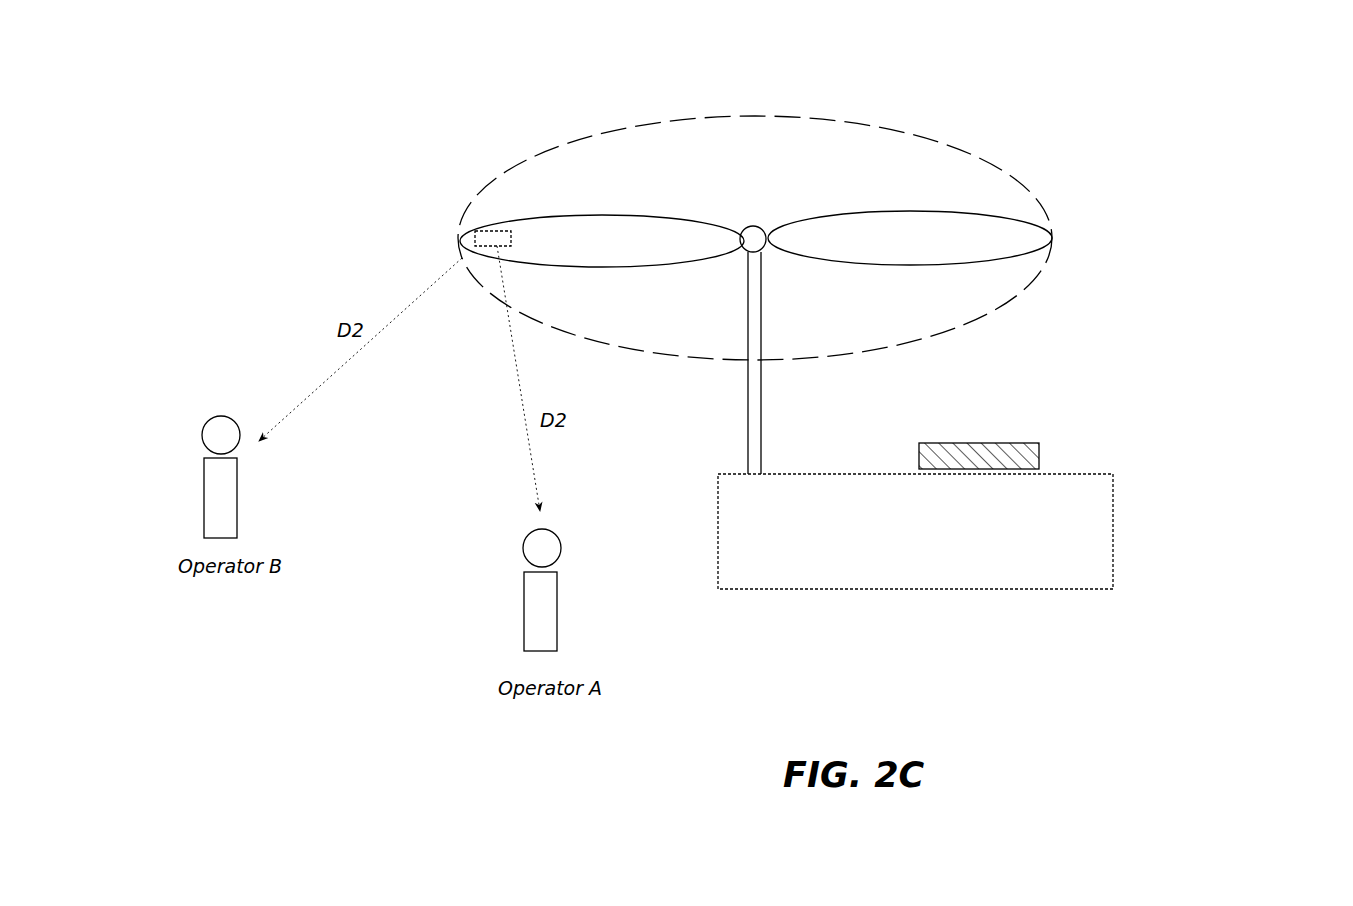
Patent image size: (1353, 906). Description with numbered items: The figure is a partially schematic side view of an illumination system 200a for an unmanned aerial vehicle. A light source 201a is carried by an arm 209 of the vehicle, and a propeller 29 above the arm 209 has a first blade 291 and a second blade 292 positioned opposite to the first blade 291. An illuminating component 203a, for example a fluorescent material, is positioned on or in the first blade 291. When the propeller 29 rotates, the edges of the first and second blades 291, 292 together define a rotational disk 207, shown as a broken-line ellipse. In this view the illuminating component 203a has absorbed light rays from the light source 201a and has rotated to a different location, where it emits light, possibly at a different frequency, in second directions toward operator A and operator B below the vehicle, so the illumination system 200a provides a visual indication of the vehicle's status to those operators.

The illumination system 200a is at (1293, 61).
The rotational disk 207 is at (752, 104).
The propeller 29 is at (805, 259).
The first blade 291 is at (547, 229).
The second blade 292 is at (939, 228).
The illuminating component 203a is at (478, 237).
The light source 201a is at (1040, 450).
The arm 209 is at (1075, 541).